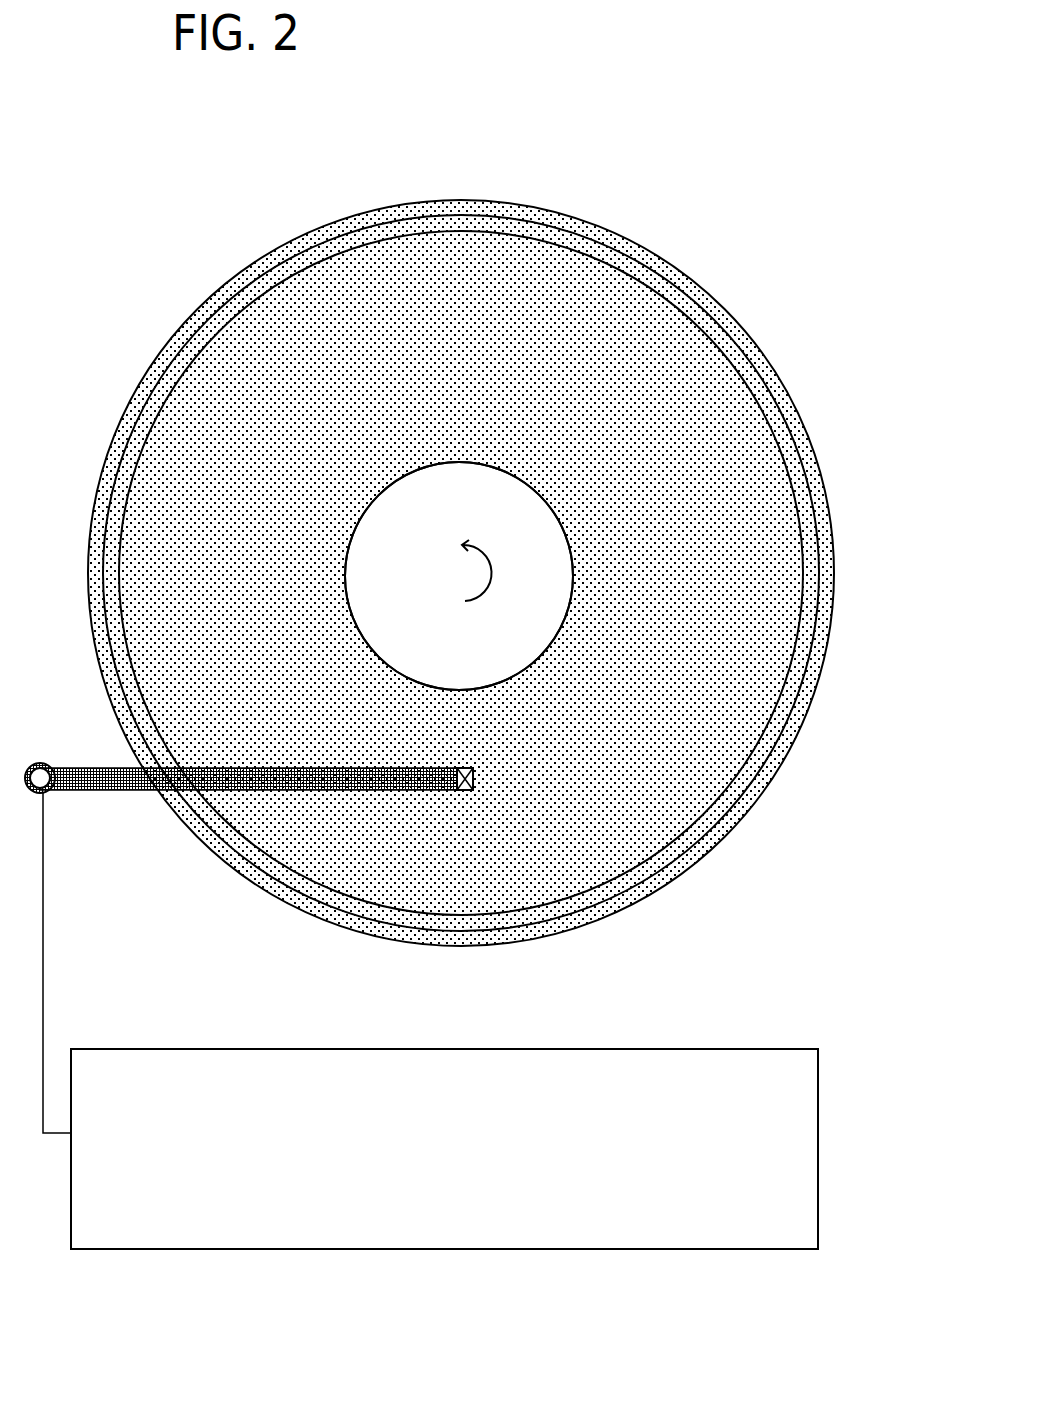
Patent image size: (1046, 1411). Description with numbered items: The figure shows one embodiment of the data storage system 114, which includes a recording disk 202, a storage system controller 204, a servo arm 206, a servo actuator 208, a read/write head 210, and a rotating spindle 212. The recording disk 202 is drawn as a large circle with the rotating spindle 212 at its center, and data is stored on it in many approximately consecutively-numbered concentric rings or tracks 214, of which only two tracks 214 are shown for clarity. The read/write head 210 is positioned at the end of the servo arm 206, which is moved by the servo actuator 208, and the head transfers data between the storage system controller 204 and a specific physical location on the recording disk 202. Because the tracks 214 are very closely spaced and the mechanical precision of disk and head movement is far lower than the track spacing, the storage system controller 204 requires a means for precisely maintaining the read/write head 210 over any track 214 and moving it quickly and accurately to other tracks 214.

The data storage system 114 is at (732, 82).
The recording disk 202 is at (633, 224).
The storage system controller 204 is at (827, 1117).
The servo arm 206 is at (226, 754).
The servo actuator 208 is at (61, 800).
The read/write head 210 is at (468, 753).
The rotating spindle 212 is at (517, 456).
The tracks 214 is at (754, 351).